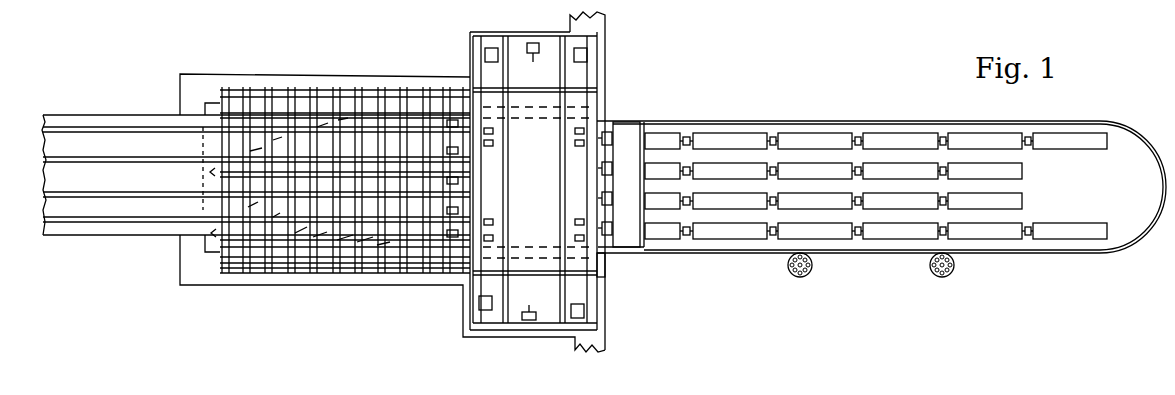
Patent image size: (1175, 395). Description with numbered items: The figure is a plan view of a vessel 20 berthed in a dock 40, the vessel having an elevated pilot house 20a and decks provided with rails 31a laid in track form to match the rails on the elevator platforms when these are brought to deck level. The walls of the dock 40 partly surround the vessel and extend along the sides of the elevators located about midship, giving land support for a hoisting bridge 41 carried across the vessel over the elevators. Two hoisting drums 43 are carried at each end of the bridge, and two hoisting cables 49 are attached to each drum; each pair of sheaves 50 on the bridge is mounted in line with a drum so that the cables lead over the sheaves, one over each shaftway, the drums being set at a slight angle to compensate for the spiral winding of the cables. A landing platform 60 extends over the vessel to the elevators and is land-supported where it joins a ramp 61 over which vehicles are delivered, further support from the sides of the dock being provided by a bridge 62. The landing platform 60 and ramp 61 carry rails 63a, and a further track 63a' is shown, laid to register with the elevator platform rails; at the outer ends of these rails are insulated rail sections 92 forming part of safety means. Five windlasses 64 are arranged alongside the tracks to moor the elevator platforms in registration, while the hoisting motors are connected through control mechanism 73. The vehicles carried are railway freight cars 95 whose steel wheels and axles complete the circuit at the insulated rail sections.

The vessel 20 is at (1078, 113).
The pilot house 20a is at (625, 132).
The rails 31a is at (772, 172).
The dock 40 is at (330, 73).
The hoisting bridge 41 is at (487, 42).
The hoisting drums 43 is at (486, 59).
The hoisting cables 49 is at (487, 67).
The sheaves 50 is at (573, 132).
The landing platform 60 is at (213, 233).
The ramp 61 is at (130, 122).
The bridge 62 is at (220, 90).
The rails 63a is at (256, 107).
The lower rod 63a' is at (256, 208).
The windlasses 64 is at (470, 160).
The control mechanism 73 is at (529, 181).
The insulated rail sections 92 is at (470, 174).
The railway freight cars 95 is at (672, 172).